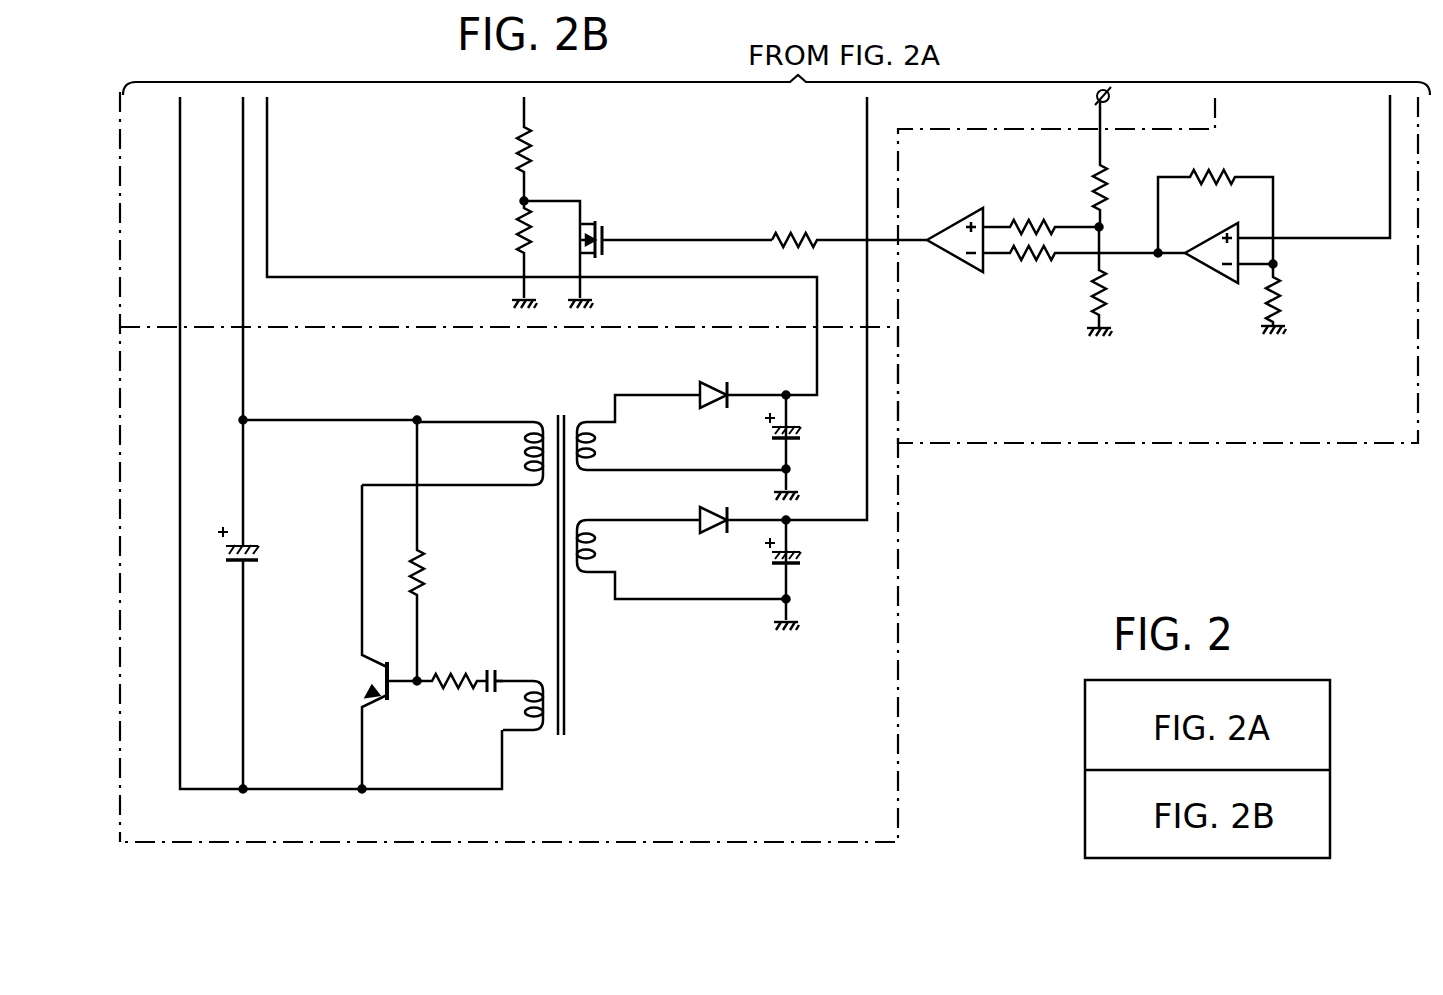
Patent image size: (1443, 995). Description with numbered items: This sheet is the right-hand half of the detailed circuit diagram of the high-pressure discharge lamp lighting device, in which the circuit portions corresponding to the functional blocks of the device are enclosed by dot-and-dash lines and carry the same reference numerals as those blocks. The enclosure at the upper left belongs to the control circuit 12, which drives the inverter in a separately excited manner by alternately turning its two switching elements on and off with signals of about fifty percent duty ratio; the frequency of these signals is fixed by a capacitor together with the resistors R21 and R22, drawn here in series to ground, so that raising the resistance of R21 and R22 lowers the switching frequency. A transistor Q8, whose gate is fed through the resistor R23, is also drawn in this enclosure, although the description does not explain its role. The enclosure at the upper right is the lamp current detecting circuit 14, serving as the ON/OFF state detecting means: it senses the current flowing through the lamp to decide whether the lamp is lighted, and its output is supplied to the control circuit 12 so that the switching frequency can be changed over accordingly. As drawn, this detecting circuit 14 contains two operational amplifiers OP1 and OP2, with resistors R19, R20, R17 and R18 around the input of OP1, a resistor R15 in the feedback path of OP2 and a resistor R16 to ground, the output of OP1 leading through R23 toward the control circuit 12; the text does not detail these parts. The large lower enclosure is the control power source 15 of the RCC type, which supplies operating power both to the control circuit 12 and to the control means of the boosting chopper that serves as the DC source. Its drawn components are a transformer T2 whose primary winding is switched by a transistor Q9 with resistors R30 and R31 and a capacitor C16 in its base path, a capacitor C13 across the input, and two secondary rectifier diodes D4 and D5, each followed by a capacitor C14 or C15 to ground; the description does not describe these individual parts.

The control circuit 12 is at (368, 246).
The lamp current detecting circuit 14 is at (1305, 425).
The control power source 15 is at (785, 746).
The resistor R21 is at (551, 149).
The resistor R22 is at (500, 253).
The transistor Q8 is at (648, 254).
The resistor R23 is at (849, 224).
The operational amplifier OP1 is at (955, 259).
The resistor R19 is at (1041, 212).
The resistor R20 is at (1084, 272).
The resistor R17 is at (1122, 159).
The resistor R18 is at (1119, 281).
The operational amplifier OP2 is at (1273, 206).
The resistor R15 is at (1217, 205).
The resistor R16 is at (1293, 299).
The transformer T2 is at (574, 560).
The diode D4 is at (745, 379).
The diode D5 is at (745, 541).
The capacitor C14 is at (808, 443).
The capacitor C15 is at (810, 570).
The capacitor C13 is at (265, 605).
The resistor R30 is at (444, 549).
The transistor Q9 is at (372, 639).
The resistor R31 is at (452, 704).
The capacitor C16 is at (495, 664).